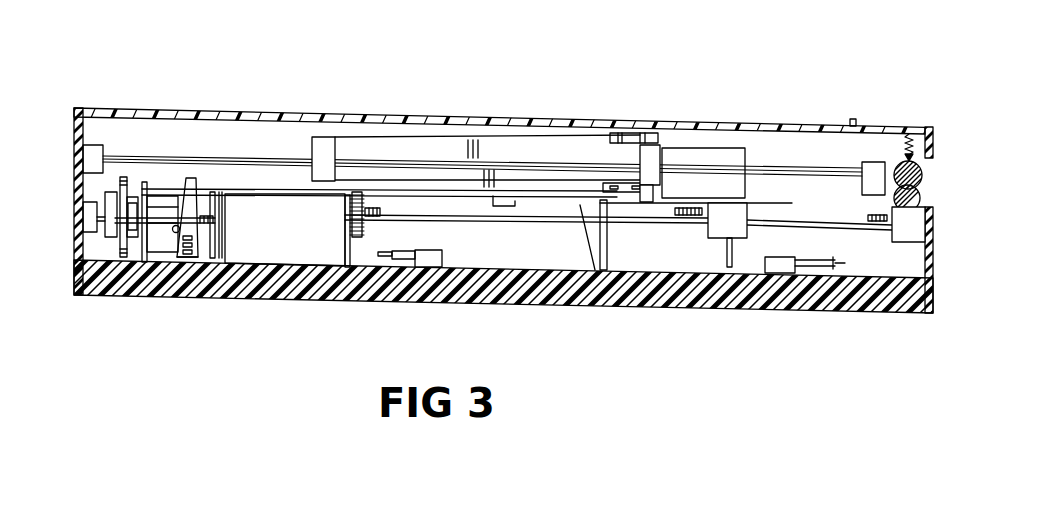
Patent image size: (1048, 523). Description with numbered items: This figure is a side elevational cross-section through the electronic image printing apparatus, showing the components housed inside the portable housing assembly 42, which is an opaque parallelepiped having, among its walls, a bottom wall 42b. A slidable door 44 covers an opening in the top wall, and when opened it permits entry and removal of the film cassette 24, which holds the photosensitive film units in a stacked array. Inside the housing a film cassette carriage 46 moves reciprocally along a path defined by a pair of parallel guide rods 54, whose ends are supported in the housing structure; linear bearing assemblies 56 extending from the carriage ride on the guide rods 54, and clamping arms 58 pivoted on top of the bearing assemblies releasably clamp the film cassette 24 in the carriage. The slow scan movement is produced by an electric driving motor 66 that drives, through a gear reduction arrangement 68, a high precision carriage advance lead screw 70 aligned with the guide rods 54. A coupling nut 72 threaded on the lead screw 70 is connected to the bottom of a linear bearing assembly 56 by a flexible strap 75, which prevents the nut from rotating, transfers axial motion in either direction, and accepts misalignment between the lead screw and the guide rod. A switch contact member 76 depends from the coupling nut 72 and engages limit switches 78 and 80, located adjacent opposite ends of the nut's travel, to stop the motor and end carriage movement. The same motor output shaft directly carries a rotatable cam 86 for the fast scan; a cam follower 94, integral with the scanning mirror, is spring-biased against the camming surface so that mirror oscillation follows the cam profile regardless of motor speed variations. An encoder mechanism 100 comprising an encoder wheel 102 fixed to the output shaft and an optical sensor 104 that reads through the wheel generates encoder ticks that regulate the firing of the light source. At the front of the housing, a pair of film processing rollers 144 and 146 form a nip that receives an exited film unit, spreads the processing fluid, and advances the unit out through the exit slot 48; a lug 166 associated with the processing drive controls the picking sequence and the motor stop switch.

The portable housing assembly 42 is at (217, 92).
The bottom wall 42b is at (357, 292).
The door 44 is at (772, 126).
The film cassette carriage 46 is at (423, 148).
The exit or discharge slot 48 is at (954, 166).
The guide rods 54 is at (208, 160).
The linear bearing assemblies 56 is at (323, 146).
The clamping arms 58 is at (624, 132).
The film cassette 24 is at (716, 156).
The electric driving motor 66 is at (256, 248).
The gear reduction arrangement 68 is at (375, 226).
The carriage advance lead screw 70 is at (510, 217).
The coupling nut 72 is at (747, 232).
The flexible strap 75 is at (670, 210).
The switch contact member 76 is at (727, 255).
The limit switch 78 is at (438, 253).
The limit switch 80 is at (197, 259).
The rotatable cam 86 is at (193, 183).
The cam follower 94 is at (175, 233).
The encoder mechanism 100 is at (88, 210).
The encoder wheel 102 is at (120, 247).
The optical sensor 104 is at (110, 196).
The film processing roller 144 is at (922, 174).
The film processing roller 146 is at (925, 200).
The lug 166 is at (910, 134).